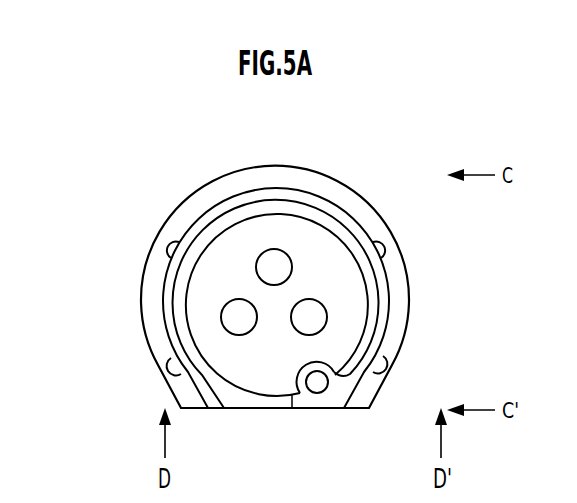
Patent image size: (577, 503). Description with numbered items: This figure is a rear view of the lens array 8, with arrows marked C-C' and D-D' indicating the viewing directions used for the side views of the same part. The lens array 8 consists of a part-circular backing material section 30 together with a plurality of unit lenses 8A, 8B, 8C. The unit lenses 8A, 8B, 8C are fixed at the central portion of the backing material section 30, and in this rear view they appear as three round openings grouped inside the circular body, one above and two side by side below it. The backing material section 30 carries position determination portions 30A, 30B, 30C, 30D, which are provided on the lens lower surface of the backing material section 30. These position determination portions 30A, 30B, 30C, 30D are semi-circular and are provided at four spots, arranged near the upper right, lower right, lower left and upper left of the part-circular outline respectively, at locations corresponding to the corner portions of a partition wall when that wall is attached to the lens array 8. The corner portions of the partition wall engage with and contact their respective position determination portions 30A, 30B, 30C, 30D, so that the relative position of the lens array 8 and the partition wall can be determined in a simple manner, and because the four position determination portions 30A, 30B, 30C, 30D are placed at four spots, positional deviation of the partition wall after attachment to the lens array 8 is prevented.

The lens array 8 is at (189, 190).
The unit lens 8A is at (273, 268).
The unit lens 8B is at (237, 320).
The unit lens 8C is at (312, 318).
The backing material section 30 is at (192, 215).
The position determination portion 30A is at (380, 249).
The position determination portion 30B is at (381, 365).
The position determination portion 30C is at (170, 367).
The position determination portion 30D is at (173, 247).